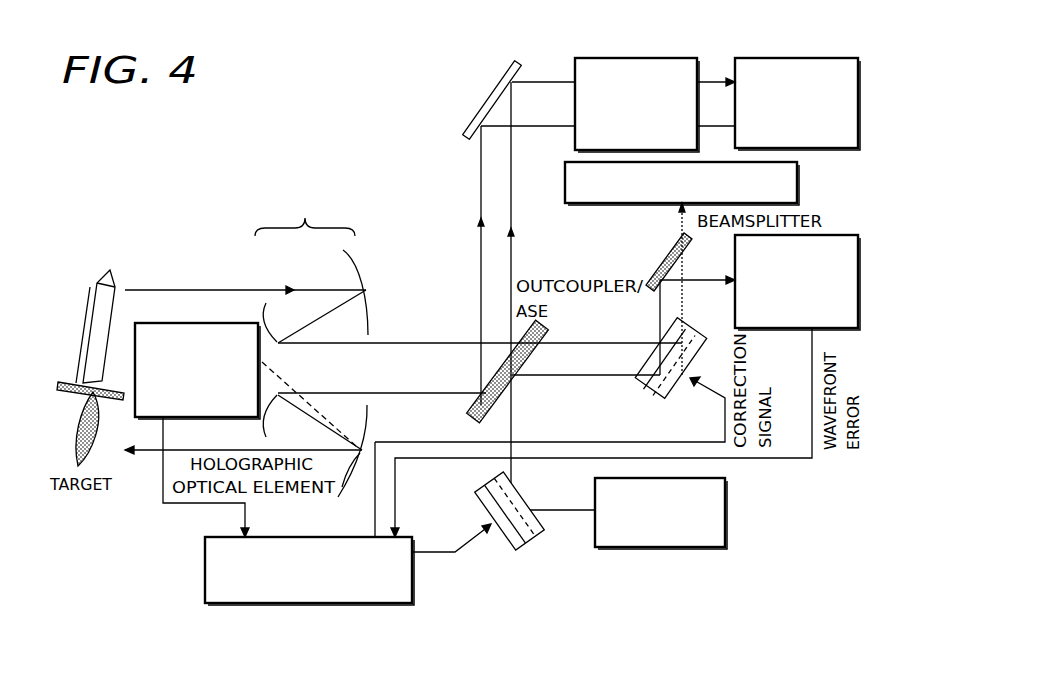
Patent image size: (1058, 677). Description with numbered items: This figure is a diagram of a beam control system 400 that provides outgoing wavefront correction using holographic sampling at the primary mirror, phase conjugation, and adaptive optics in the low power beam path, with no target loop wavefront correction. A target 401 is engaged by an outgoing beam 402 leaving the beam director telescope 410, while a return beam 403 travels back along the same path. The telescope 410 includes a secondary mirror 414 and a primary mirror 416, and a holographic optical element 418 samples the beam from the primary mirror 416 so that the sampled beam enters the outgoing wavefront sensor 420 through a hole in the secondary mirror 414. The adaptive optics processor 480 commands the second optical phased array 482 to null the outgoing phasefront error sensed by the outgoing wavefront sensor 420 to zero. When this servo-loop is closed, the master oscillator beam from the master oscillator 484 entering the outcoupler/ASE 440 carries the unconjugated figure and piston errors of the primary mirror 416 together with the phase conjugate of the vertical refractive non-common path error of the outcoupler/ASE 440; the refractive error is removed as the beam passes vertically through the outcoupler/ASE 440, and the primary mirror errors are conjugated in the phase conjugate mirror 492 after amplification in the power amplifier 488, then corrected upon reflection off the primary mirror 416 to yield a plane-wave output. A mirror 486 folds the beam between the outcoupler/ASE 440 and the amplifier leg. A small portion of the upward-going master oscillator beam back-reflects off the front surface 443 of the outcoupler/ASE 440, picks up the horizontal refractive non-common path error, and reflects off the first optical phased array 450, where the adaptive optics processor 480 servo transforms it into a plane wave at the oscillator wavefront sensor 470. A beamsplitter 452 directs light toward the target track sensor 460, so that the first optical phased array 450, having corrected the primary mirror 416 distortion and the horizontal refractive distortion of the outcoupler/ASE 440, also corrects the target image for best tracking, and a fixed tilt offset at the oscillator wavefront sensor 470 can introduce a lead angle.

The beam control system 400 is at (207, 167).
The target 401 is at (92, 322).
The outgoing beam 402 is at (212, 290).
The return beam from target 403 is at (151, 453).
The beam director telescope 410 is at (328, 209).
The secondary mirror 414 is at (277, 303).
The primary mirror 416 is at (364, 291).
The holographic optical element 418 is at (345, 487).
The outgoing wavefront sensor 420 is at (215, 323).
The outcoupler/ASE 440 is at (469, 420).
The front surface 443 is at (462, 400).
The OPA 1 450 is at (638, 385).
The beamsplitter 452 is at (655, 258).
The target track sensor 460 is at (800, 181).
The oscillator wavefront sensor 470 is at (778, 330).
The adaptive optics processor 480 is at (205, 568).
The OPA 2 482 is at (538, 548).
The master oscillator 484 is at (676, 548).
The mirror 486 is at (475, 112).
The power amplifier 488 is at (632, 58).
The phase conjugate mirror 492 is at (808, 58).